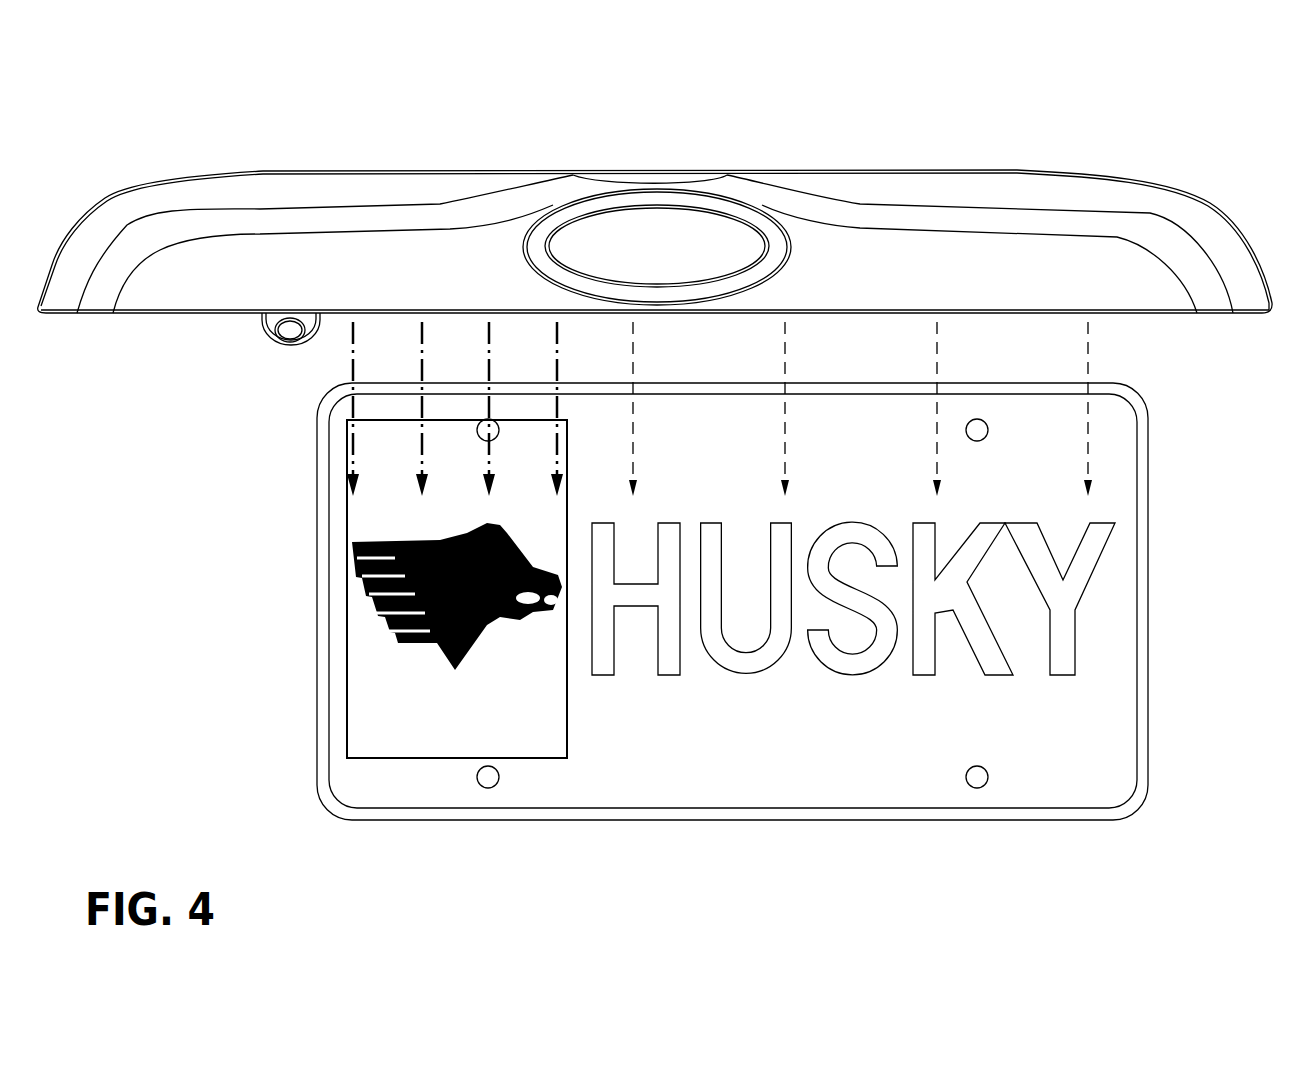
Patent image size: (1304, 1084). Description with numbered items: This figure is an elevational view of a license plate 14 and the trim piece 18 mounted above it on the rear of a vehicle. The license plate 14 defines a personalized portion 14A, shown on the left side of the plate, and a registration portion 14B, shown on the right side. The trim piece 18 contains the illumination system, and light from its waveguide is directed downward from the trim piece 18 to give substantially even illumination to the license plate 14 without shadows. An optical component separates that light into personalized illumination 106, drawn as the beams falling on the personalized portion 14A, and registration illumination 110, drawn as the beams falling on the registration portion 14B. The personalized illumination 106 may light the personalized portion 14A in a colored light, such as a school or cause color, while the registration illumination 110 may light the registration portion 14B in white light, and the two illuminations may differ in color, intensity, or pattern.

The trim piece 18 is at (1035, 172).
The personalized illumination 106 is at (488, 456).
The registration illumination 110 is at (937, 448).
The license plate 14 is at (880, 790).
The personalized portion 14A is at (378, 513).
The registration portion 14B is at (1003, 608).